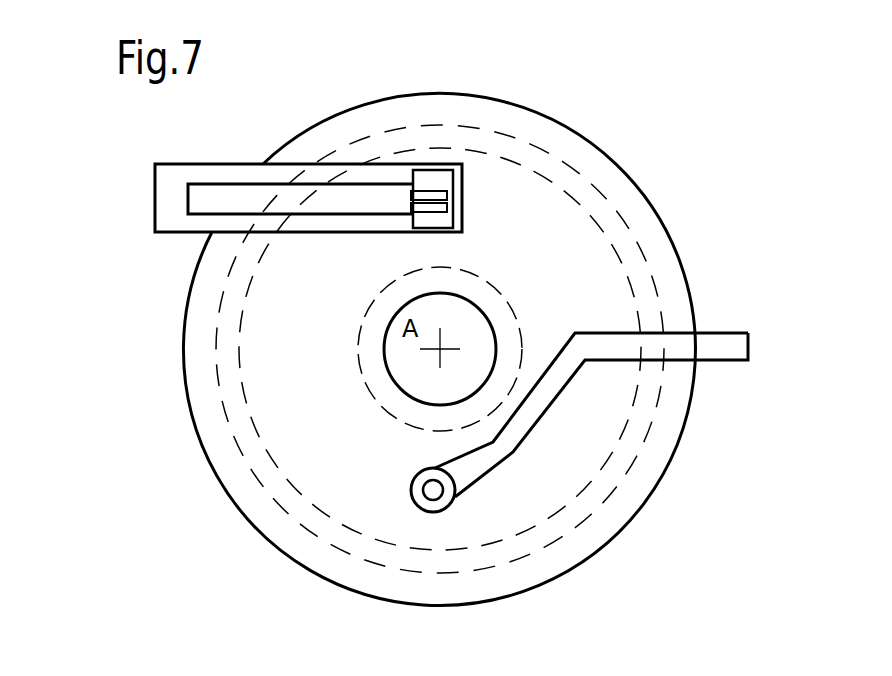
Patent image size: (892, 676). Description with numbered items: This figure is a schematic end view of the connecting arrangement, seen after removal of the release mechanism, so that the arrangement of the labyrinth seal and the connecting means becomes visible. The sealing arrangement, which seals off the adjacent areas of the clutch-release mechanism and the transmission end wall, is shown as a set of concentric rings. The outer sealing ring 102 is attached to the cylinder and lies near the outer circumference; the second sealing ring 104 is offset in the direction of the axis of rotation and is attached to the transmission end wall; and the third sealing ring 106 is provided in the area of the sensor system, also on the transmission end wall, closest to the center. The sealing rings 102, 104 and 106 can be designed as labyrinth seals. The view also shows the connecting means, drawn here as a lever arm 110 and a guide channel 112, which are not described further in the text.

The outer sealing ring 102 is at (593, 181).
The second sealing ring 104 is at (603, 229).
The third sealing ring 106 is at (507, 300).
The lever arm 110 is at (707, 357).
The guide channel 112 is at (212, 197).